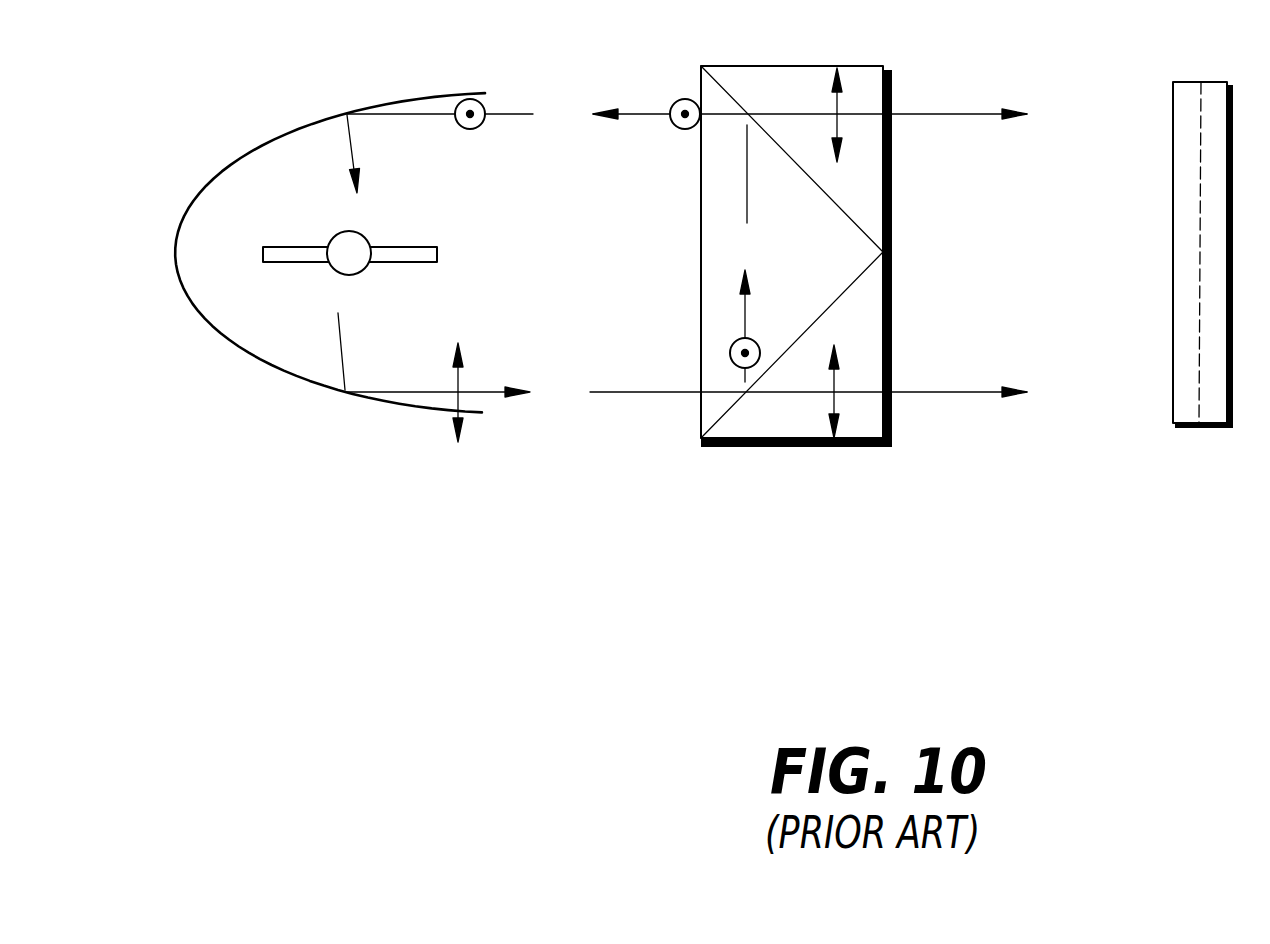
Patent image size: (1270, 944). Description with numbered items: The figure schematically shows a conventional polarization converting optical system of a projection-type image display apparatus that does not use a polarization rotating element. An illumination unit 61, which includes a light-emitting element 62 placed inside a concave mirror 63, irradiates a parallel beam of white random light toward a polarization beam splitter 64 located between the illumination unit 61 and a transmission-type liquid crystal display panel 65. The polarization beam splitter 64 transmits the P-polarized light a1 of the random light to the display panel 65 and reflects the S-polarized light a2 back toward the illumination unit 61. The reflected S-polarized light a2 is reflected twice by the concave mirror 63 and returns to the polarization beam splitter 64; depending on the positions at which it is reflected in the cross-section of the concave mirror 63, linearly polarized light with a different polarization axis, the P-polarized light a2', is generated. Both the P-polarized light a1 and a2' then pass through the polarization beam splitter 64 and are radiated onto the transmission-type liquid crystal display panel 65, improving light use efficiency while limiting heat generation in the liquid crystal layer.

The illumination unit 61 is at (493, 497).
The lamp / light emitting element 62 is at (400, 247).
The concave mirror 63 is at (303, 127).
The polarization beam splitter 64 is at (795, 447).
The transmission-type liquid crystal display panel 65 is at (1199, 428).
The P-polarized light a1 is at (837, 120).
The S-polarized light a2 is at (607, 233).
The P-polarized light a2' is at (505, 373).